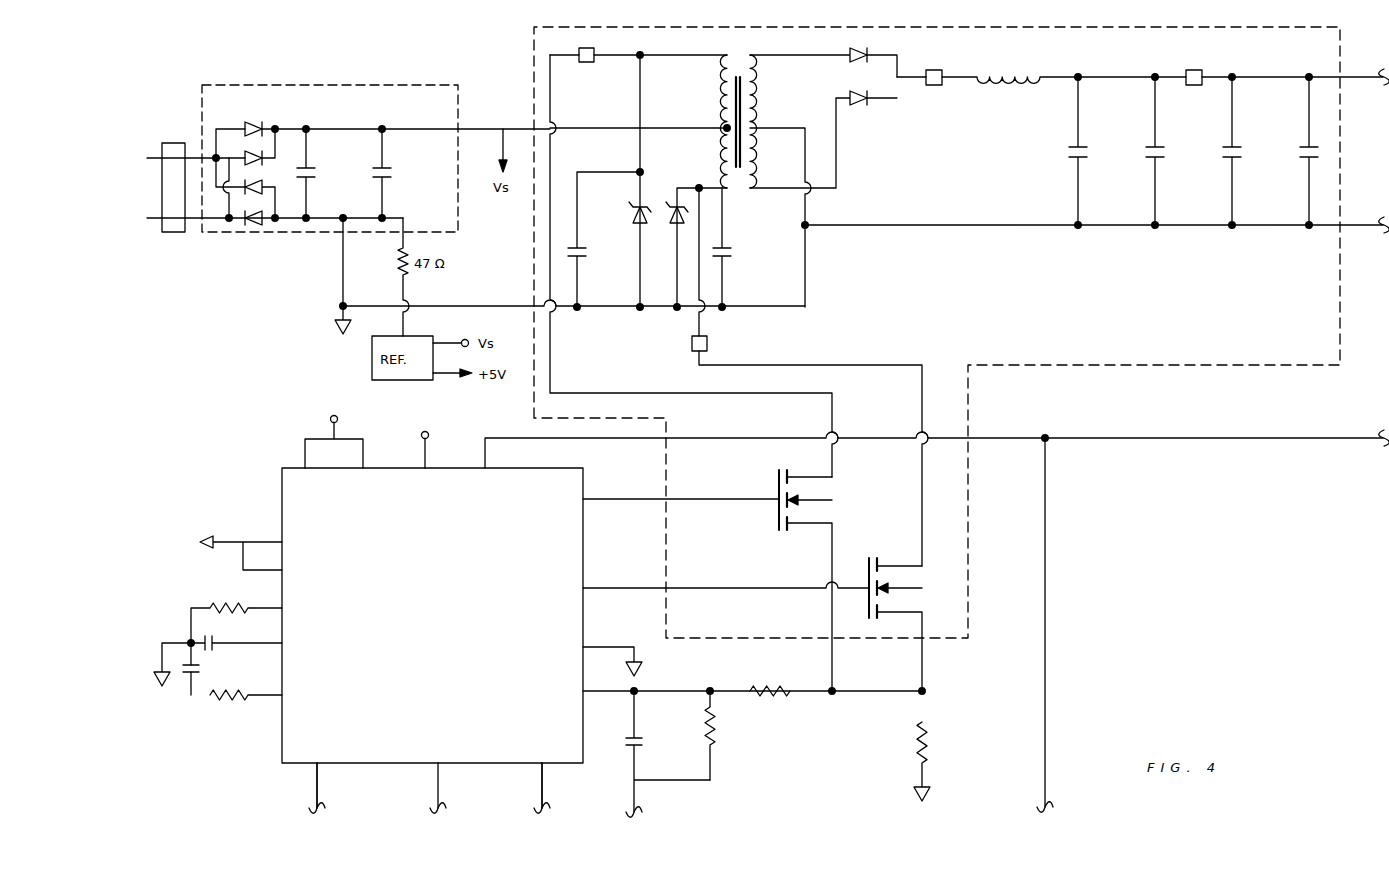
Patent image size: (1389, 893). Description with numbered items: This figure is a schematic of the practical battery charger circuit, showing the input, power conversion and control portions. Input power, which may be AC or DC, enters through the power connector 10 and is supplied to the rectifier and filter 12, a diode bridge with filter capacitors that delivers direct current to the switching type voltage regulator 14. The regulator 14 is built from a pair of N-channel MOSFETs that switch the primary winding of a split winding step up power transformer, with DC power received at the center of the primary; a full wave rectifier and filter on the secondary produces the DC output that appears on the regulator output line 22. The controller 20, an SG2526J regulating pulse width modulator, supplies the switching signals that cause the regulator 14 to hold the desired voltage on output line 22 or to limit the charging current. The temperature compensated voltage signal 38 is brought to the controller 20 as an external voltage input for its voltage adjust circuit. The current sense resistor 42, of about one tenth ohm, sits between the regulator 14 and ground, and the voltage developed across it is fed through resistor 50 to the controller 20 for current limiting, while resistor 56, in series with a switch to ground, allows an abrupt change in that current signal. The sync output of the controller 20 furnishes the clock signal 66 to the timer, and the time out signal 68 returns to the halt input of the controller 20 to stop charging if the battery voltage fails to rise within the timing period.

The power connector 10 is at (174, 143).
The rectifier and filter 12 is at (290, 85).
The switching type voltage regulator 14 is at (533, 84).
The controller 20 is at (282, 742).
The regulator output line 22 is at (1362, 77).
The voltage signal 38 is at (1205, 440).
The current sense resistor 42 is at (915, 745).
The resistor 50 is at (790, 697).
The resistor 56 is at (715, 747).
The clock signal 66 is at (317, 788).
The time out signal 68 is at (542, 788).